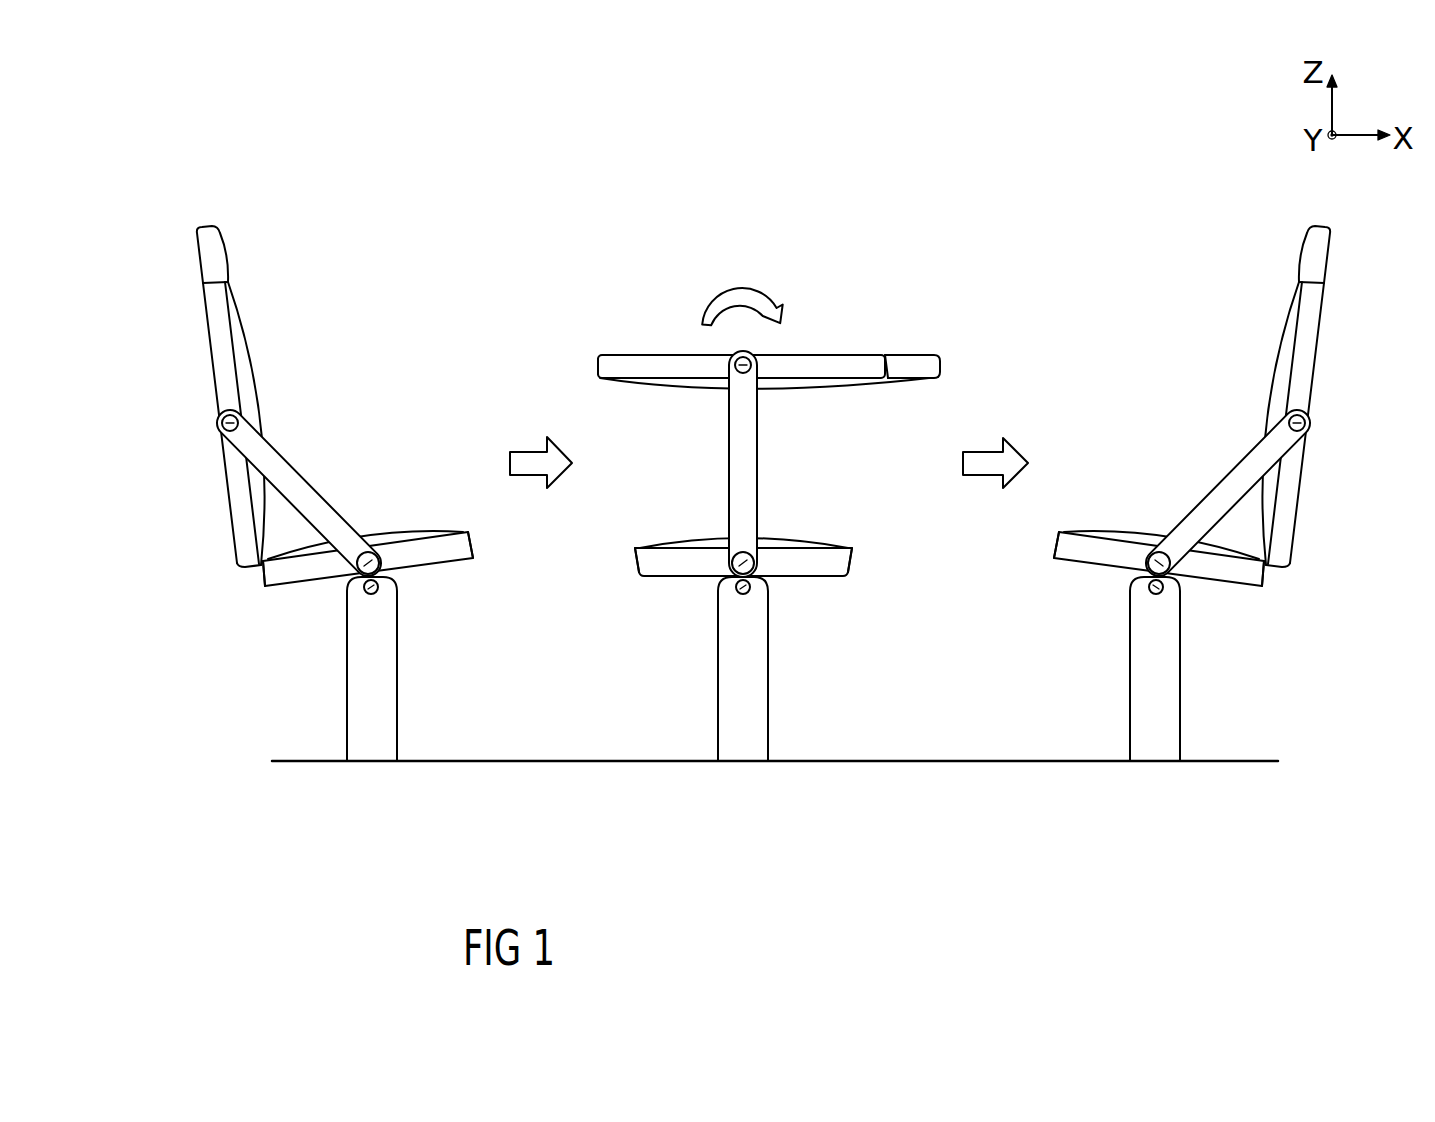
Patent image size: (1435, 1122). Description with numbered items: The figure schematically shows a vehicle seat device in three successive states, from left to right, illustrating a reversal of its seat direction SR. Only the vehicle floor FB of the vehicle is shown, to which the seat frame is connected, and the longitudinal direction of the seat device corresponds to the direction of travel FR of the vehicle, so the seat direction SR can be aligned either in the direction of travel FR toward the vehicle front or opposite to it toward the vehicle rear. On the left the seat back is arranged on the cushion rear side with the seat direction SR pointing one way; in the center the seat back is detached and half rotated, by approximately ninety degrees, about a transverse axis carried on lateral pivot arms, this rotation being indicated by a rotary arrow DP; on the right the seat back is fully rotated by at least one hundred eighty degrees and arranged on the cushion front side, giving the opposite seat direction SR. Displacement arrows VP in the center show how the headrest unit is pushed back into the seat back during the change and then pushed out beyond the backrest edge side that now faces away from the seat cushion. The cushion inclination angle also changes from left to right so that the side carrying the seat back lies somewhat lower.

The vehicle floor FB is at (373, 762).
The direction of travel FR is at (810, 172).
The seat direction SR is at (433, 305).
The displacement arrow VP is at (597, 367).
The rotary arrow DP is at (761, 306).